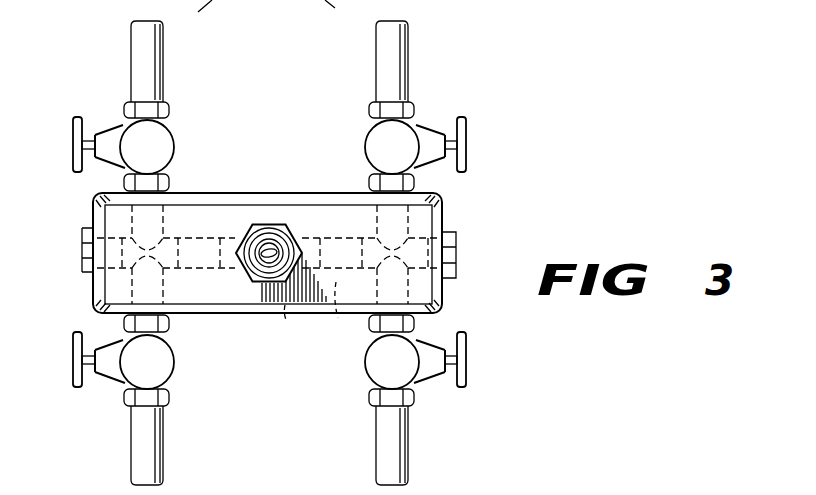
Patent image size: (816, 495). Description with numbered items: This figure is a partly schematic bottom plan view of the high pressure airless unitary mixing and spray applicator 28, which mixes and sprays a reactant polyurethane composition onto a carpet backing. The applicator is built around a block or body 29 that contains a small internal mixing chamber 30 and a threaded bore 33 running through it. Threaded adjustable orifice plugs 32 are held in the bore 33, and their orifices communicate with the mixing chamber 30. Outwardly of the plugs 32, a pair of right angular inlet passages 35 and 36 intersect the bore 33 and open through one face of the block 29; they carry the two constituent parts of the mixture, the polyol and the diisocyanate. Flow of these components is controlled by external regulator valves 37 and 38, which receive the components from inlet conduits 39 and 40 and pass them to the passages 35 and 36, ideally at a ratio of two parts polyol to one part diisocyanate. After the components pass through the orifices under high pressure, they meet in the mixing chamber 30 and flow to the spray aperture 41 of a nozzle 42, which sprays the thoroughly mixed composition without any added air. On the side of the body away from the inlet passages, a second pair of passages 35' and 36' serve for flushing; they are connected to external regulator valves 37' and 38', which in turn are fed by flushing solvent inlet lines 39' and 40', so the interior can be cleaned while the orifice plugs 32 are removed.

The high pressure airless unitary mixing and spray applicator 28 is at (456, 211).
The block or body 29 is at (257, 208).
The internal mixing chamber 30 is at (312, 264).
The threaded adjustable orifice plug 32 is at (198, 245).
The threaded bore 33 is at (167, 270).
The right angular inlet passage 35 is at (179, 201).
The flushing passage 35' is at (111, 295).
The right angular inlet passage 36 is at (370, 202).
The flushing passage 36' is at (364, 306).
The external regulator valve 37 is at (142, 146).
The external regulator valve 37' is at (140, 360).
The external regulator valve 38 is at (416, 143).
The external regulator valve 38' is at (415, 365).
The inlet conduit 39 is at (168, 61).
The flushing solvent inlet line 39' is at (167, 445).
The inlet conduit 40 is at (411, 61).
The flushing solvent inlet line 40' is at (413, 445).
The spray aperture 41 is at (270, 256).
The nozzle 42 is at (287, 243).